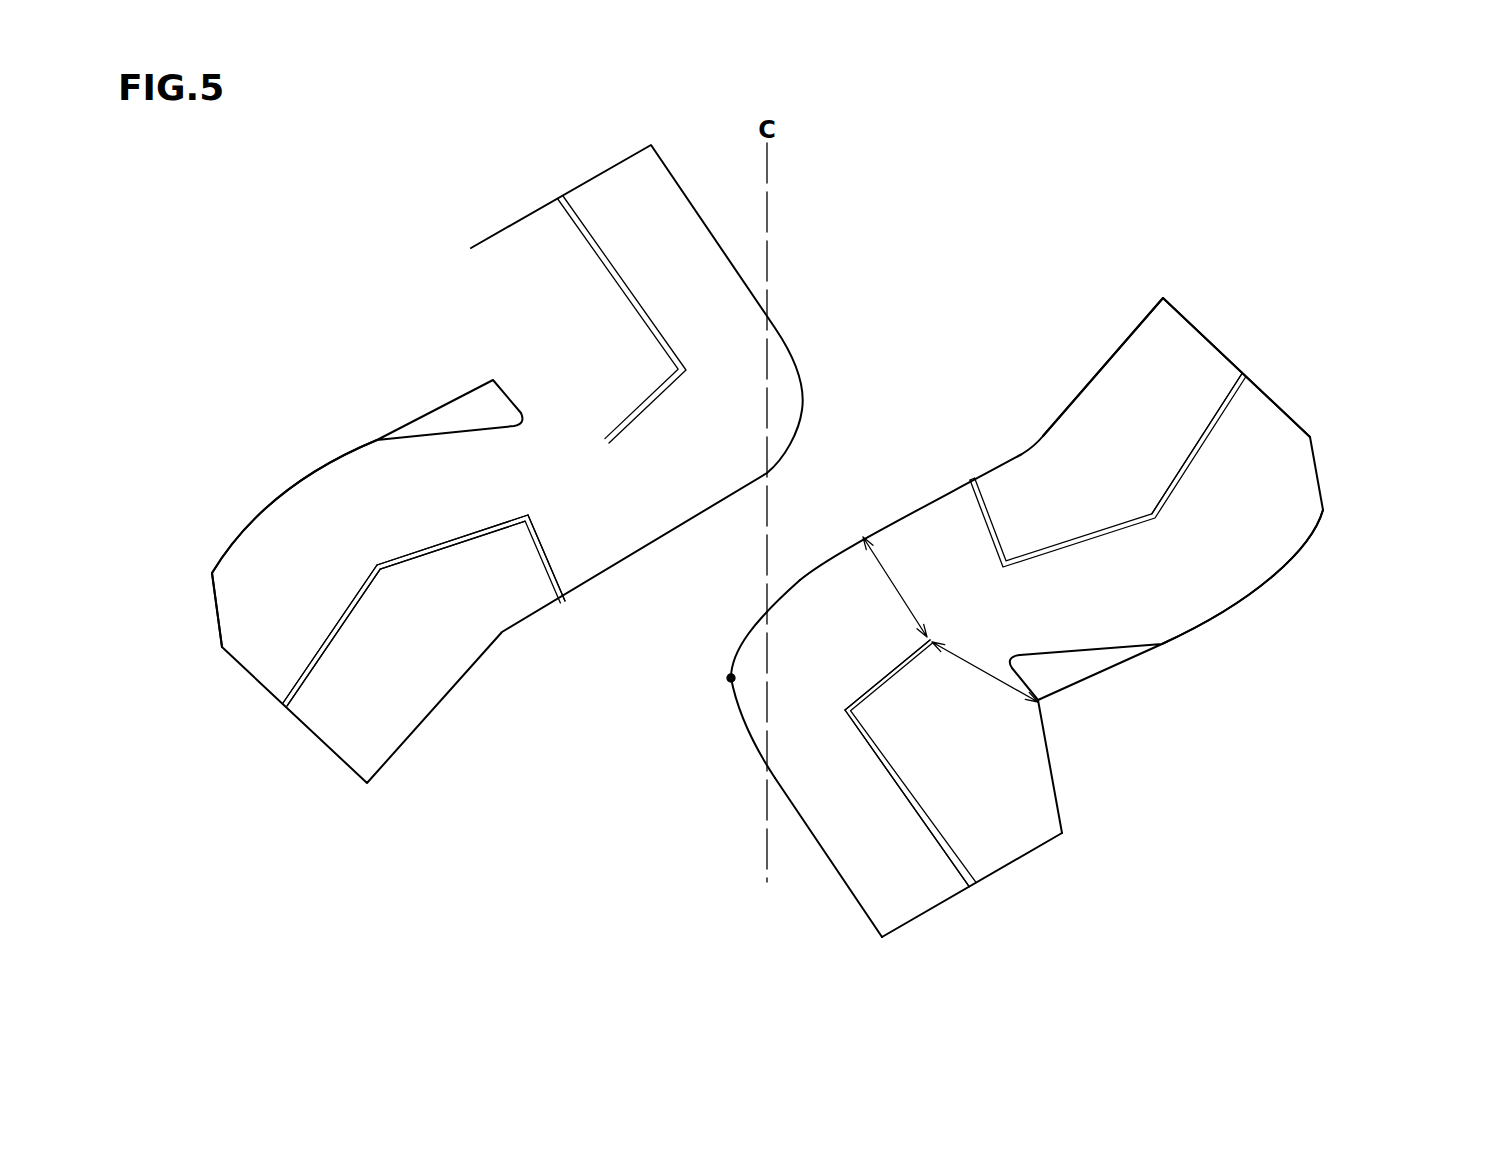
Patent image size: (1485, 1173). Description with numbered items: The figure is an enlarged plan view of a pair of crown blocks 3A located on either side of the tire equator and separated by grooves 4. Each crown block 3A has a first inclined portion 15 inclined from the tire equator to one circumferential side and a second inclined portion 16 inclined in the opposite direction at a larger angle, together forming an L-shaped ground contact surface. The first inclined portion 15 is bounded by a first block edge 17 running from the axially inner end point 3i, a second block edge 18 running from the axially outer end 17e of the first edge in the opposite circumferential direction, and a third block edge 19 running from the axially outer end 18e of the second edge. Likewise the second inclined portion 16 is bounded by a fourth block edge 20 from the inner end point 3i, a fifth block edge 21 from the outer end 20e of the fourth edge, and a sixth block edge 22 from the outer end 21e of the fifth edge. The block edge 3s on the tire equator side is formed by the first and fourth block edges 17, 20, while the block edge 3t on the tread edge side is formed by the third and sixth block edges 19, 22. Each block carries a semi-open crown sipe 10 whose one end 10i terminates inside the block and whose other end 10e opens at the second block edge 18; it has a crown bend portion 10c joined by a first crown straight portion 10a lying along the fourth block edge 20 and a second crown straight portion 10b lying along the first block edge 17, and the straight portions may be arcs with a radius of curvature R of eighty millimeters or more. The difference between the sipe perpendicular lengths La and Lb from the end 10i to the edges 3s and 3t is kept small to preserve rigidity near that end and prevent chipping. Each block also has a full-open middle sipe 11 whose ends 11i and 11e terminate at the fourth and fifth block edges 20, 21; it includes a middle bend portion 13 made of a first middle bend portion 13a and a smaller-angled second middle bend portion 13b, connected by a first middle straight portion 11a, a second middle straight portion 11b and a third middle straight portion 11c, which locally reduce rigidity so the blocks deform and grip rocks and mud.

The crown block 3A is at (341, 262).
The axially inner end point 3i is at (731, 678).
The block edge on the tire equator side 3s is at (1120, 345).
The block edge on the tread edge side 3t is at (1250, 593).
The groove 4 is at (812, 315).
The crown sipe 10 is at (880, 760).
The first crown straight portion 10a is at (885, 676).
The second crown straight portion 10b is at (930, 832).
The crown bend portion 10c is at (831, 727).
The other end of crown sipe 10e is at (973, 885).
The one end of crown sipe 10i is at (927, 637).
The middle sipe 11 is at (1057, 547).
The first middle straight portion 11a is at (322, 647).
The second middle straight portion 11b is at (440, 542).
The third middle straight portion 11c is at (553, 577).
The other end of middle sipe 11e is at (970, 480).
The one end of middle sipe 11i is at (283, 704).
The middle bend portion 13 is at (432, 800).
The first middle bend portion 13a is at (416, 610).
The second middle bend portion 13b is at (507, 586).
The first inclined portion 15 is at (515, 318).
The second inclined portion 16 is at (327, 500).
The first block edge 17 is at (800, 828).
The axially outer end of first block edge 17e is at (882, 937).
The second block edge 18 is at (925, 913).
The axially outer end of second block edge 18e is at (1062, 833).
The third block edge 19 is at (1060, 803).
The fourth block edge 20 is at (1073, 400).
The axially outer end of fourth block edge 20e is at (1163, 298).
The fifth block edge 21 is at (1220, 352).
The axially outer end of fifth block edge 21e is at (1323, 510).
The sixth block edge 22 is at (1280, 562).
The length of sipe perpendicular La is at (897, 588).
The length of sipe perpendicular Lb is at (990, 670).
The radius of curvature R is at (923, 786).